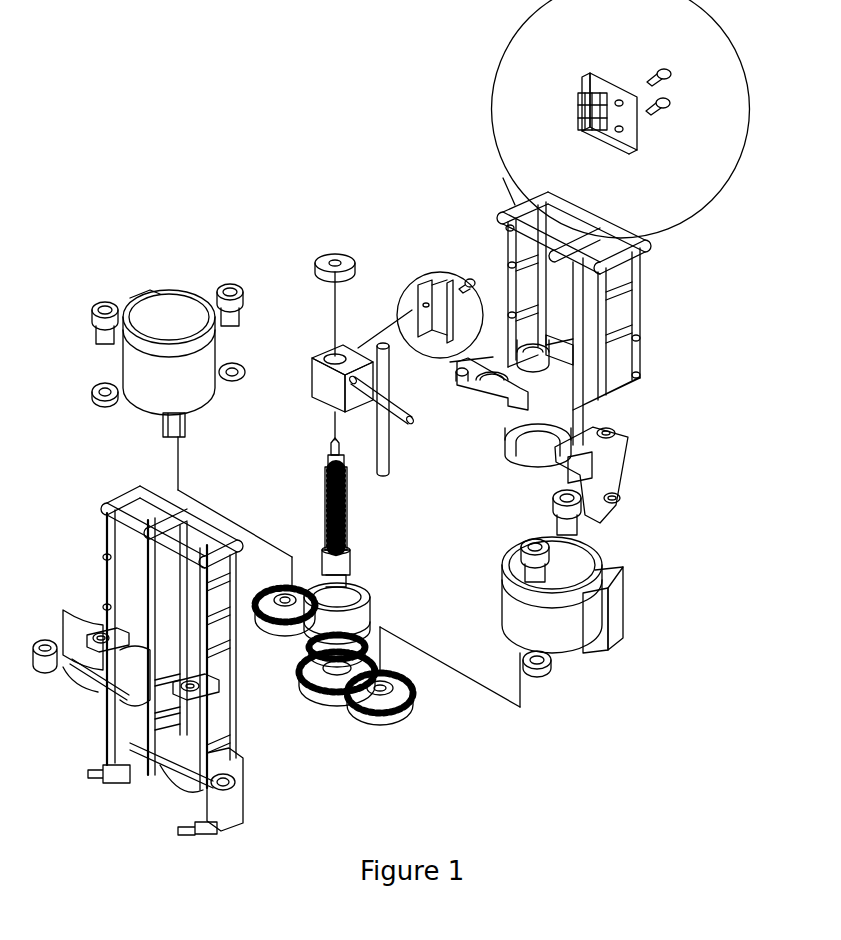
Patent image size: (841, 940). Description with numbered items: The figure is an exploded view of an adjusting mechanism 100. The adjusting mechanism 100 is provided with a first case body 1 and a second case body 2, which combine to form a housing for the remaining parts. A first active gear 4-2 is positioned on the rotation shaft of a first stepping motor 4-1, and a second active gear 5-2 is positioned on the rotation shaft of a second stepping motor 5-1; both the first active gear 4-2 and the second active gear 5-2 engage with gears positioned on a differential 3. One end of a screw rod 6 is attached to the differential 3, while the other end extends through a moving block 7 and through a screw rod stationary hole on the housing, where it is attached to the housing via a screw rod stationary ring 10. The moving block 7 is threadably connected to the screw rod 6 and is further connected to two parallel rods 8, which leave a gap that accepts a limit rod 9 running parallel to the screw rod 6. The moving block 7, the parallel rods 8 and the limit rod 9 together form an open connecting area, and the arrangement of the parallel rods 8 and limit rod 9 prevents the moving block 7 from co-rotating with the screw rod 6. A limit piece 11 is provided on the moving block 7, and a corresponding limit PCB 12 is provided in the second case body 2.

The first case body 1 is at (632, 381).
The second case body 2 is at (220, 677).
The differential 3 is at (371, 617).
The first stepping motor 4-1 is at (130, 383).
The first active gear 4-2 is at (273, 587).
The second stepping motor 5-1 is at (590, 640).
The second active gear 5-2 is at (403, 723).
The screw rod 6 is at (323, 512).
The moving block 7 is at (323, 382).
The parallel rods 8 is at (411, 422).
The limit rod 9 is at (389, 383).
The screw rod stationary ring 10 is at (352, 262).
The limit piece 11 is at (434, 290).
The limit PCB 12 is at (612, 136).
The adjusting mechanism 100 is at (608, 820).